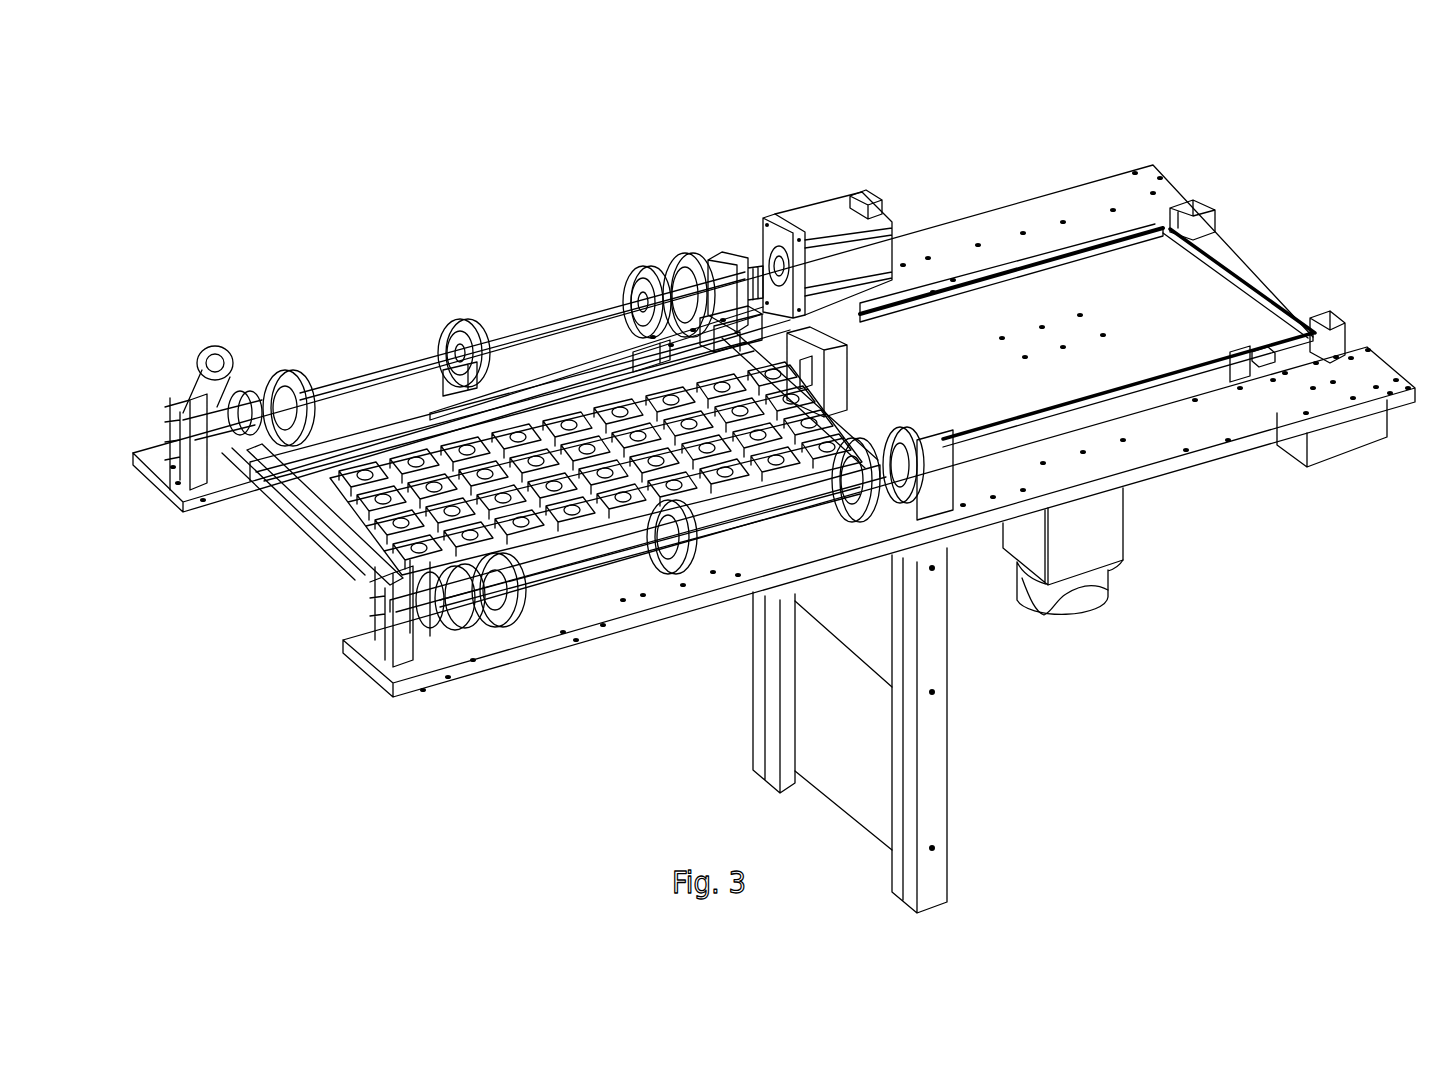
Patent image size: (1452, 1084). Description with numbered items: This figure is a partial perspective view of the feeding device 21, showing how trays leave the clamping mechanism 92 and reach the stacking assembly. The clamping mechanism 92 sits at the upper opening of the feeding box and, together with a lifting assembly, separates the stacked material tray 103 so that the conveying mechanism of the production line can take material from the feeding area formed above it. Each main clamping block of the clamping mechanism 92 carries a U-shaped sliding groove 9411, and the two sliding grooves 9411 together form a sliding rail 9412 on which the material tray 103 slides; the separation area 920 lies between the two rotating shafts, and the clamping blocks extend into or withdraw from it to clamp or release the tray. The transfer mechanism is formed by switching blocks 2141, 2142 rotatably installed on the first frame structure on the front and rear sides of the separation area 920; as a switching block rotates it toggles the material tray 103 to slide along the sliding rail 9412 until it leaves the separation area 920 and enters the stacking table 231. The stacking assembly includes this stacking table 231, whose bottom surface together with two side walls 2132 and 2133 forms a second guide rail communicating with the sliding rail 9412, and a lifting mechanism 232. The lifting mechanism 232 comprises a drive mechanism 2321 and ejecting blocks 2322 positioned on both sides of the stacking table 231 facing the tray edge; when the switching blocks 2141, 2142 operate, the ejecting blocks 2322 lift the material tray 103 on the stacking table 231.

The feeding device 21 is at (117, 240).
The material tray 103 is at (425, 432).
The sliding groove 9411 is at (465, 430).
The separation area 920 is at (545, 400).
The sliding rail 9412 is at (640, 272).
The switching block 2142 is at (848, 410).
The side wall 2132 is at (1080, 240).
The side wall 2133 is at (1150, 392).
The stacking table 231 is at (1202, 290).
The switching block 2141 is at (345, 545).
The clamping mechanism 92 is at (380, 617).
The drive mechanism 2321 is at (1105, 533).
The ejecting block 2322 is at (1265, 358).
The lifting mechanism 232 is at (1337, 598).